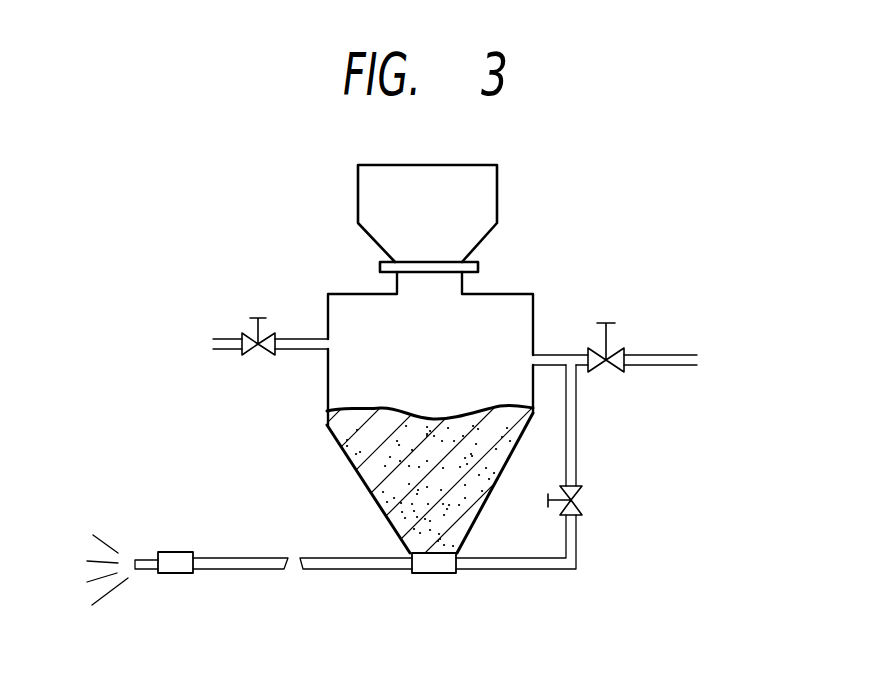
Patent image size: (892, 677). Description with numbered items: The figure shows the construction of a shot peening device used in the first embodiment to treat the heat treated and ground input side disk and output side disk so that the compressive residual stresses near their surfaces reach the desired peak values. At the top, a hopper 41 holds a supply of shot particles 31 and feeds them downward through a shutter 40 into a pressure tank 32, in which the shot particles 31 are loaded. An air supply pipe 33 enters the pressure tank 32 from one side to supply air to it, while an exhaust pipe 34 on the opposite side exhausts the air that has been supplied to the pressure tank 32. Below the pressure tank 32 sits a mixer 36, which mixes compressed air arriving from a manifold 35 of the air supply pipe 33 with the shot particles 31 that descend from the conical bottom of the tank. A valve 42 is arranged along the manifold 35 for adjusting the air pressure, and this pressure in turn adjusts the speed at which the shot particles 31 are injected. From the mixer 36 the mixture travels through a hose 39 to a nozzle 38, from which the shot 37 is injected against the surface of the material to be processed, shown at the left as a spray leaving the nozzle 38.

The shot particles 31 is at (528, 437).
The pressure tank 32 is at (520, 317).
The air supply pipe 33 is at (665, 355).
The exhaust pipe 34 is at (227, 349).
The manifold 35 is at (576, 472).
The mixer 36 is at (442, 573).
The shot 37 is at (103, 597).
The nozzle 38 is at (178, 573).
The hose 39 is at (277, 569).
The shutter 40 is at (478, 258).
The hopper 41 is at (497, 190).
The valve 42 is at (582, 508).